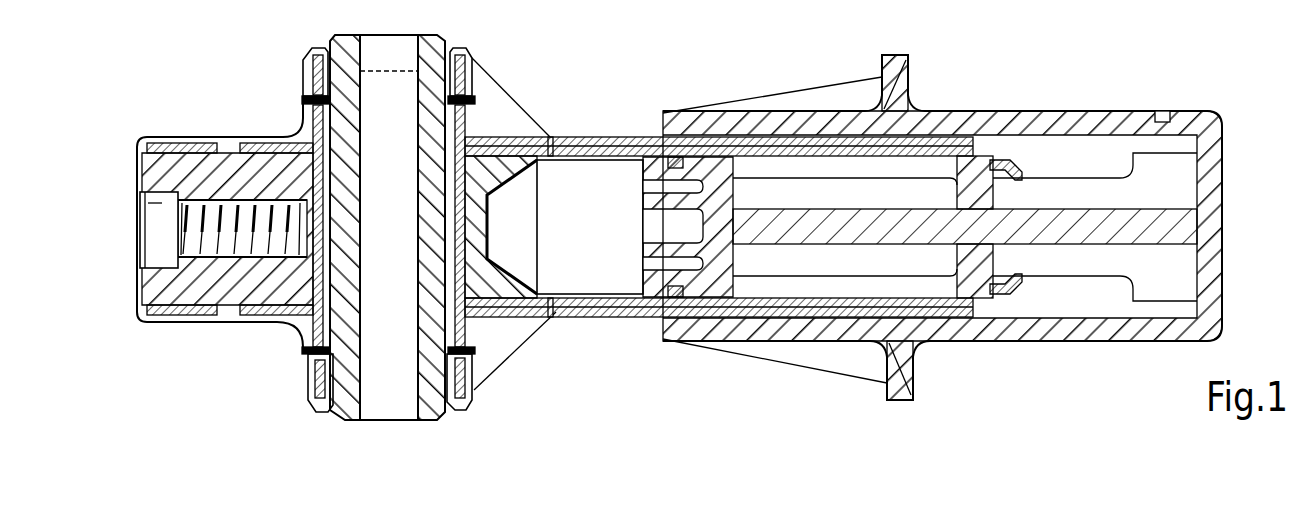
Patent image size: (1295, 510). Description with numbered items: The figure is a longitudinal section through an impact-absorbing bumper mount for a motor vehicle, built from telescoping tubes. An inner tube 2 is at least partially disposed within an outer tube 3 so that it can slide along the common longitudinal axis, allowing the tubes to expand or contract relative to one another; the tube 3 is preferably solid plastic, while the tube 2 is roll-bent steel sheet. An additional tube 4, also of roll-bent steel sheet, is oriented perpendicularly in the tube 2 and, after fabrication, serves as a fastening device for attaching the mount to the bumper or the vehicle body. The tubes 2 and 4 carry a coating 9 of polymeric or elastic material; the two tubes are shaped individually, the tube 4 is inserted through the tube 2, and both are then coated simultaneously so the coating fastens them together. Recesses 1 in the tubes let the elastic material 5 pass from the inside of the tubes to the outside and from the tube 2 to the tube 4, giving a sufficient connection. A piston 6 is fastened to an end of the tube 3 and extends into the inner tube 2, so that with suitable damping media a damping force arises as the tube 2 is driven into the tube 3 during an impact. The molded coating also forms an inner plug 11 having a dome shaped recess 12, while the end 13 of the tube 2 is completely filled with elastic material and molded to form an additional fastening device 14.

The recesses 1 is at (810, 300).
The tube 2 is at (582, 320).
The tube 3 is at (1013, 120).
The additional tube 4 is at (473, 395).
The elastic material 5 is at (553, 138).
The piston 6 is at (1076, 226).
The coating 9 is at (644, 320).
The inner plug 11 is at (493, 163).
The dome shaped recess 12 is at (522, 225).
The end of the tube 13 is at (192, 138).
The additional fastening device 14 is at (176, 222).